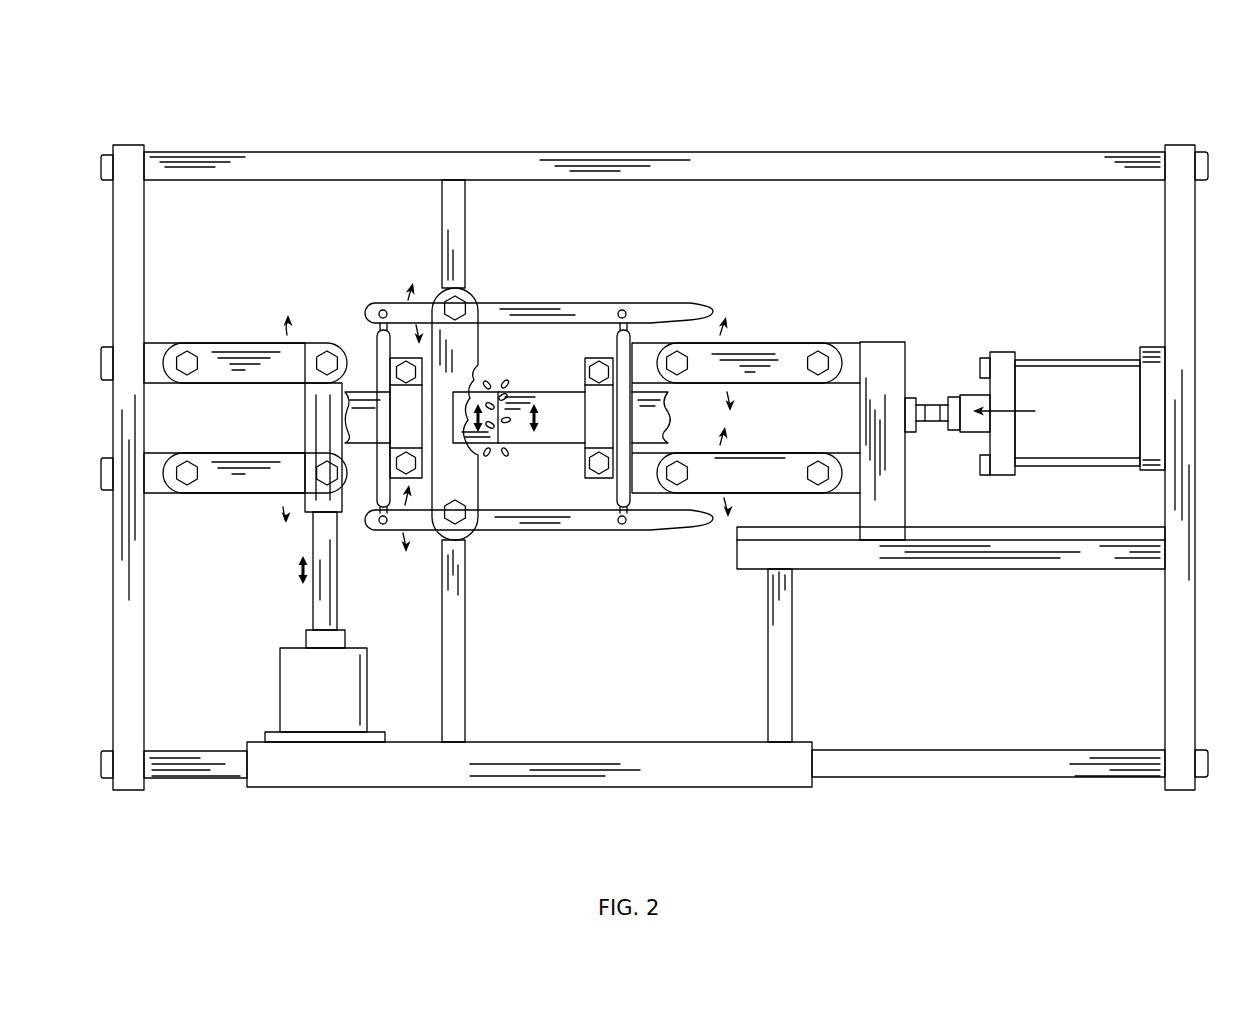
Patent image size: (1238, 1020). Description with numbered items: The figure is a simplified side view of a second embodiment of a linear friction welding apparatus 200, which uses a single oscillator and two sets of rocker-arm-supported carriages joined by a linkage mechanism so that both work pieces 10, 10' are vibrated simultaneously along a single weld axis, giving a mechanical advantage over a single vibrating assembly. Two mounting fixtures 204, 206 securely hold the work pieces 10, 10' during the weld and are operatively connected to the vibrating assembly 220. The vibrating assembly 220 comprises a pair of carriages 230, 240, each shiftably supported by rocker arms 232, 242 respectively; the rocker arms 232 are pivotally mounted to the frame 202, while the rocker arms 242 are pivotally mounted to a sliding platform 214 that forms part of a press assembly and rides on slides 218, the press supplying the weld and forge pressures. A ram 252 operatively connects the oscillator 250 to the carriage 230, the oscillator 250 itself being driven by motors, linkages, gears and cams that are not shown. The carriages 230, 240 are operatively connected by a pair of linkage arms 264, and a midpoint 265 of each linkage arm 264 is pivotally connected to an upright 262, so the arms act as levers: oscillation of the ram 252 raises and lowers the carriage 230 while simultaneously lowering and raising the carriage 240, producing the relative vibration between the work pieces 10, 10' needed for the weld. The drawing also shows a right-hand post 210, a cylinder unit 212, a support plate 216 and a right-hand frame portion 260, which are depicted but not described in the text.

The linear friction welding apparatus 200 is at (1118, 112).
The frame 202 is at (135, 197).
The mounting fixture 204 is at (410, 330).
The mounting fixture 206 is at (586, 378).
The right frame post 210 is at (1132, 332).
The pneumatic cylinder 212 is at (1065, 381).
The sliding platform 214 is at (900, 366).
The support plate 216 is at (1020, 533).
The slides 218 is at (862, 569).
The vibrating assembly 220 is at (267, 516).
The carriage 230 is at (378, 350).
The rocker arms 232 is at (207, 346).
The carriage 240 is at (630, 354).
The rocker arms 242 is at (796, 345).
The oscillator 250 is at (350, 707).
The ram 252 is at (328, 558).
The right frame assembly 260 is at (632, 549).
The upright 262 is at (455, 660).
The linkage arms 264 is at (489, 312).
The midpoint 265 is at (459, 532).
The work piece 10 is at (494, 400).
The work piece 10' is at (584, 432).